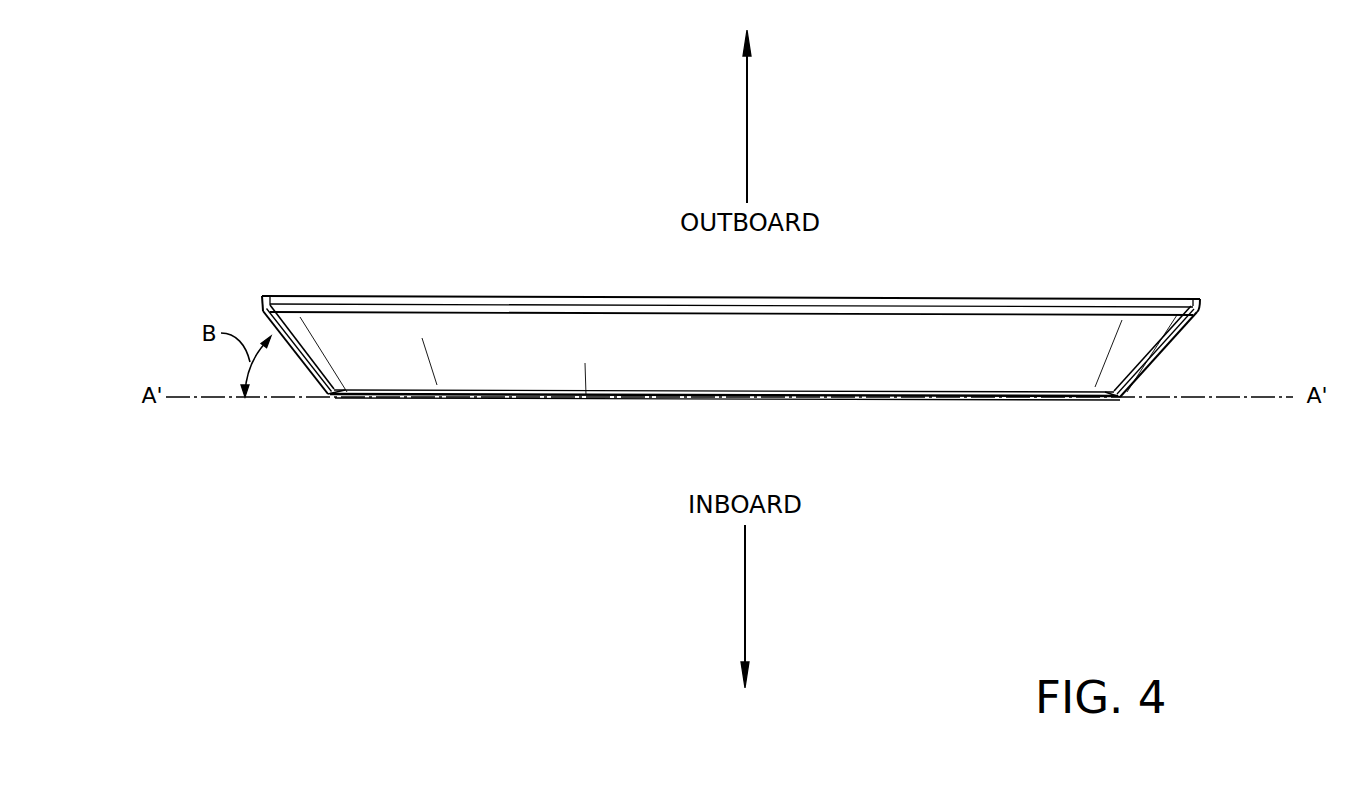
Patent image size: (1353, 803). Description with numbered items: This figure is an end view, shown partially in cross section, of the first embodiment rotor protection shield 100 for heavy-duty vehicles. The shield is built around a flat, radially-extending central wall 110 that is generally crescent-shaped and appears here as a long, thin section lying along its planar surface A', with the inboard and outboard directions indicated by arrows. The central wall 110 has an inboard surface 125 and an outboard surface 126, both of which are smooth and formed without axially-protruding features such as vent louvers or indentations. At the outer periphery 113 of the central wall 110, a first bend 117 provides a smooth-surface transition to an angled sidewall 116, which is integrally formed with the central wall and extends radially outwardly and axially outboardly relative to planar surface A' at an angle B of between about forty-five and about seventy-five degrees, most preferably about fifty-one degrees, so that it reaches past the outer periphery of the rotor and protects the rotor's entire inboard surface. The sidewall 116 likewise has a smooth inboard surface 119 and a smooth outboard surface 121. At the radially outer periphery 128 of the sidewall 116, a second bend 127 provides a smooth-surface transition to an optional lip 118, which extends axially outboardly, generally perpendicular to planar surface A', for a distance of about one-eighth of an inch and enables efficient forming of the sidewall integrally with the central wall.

The rotor protection shield 100 is at (332, 181).
The central wall 110 is at (770, 398).
The outer periphery 113 is at (1120, 400).
The angled sidewall 116 is at (308, 355).
The first bend 117 is at (342, 395).
The lip 118 is at (262, 303).
The inboard surface of sidewall 119 is at (1153, 372).
The outboard surface of sidewall 121 is at (309, 353).
The inboard surface of central wall 125 is at (628, 395).
The outboard surface of central wall 126 is at (535, 393).
The second bend 127 is at (1186, 315).
The radially outer periphery of sidewall 128 is at (268, 315).